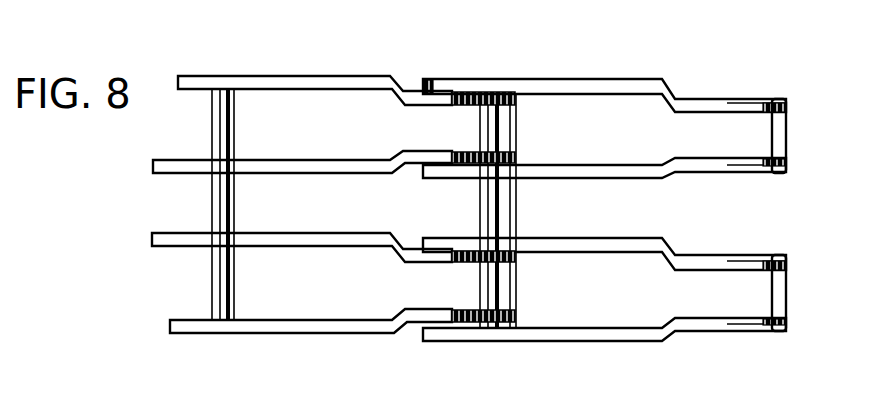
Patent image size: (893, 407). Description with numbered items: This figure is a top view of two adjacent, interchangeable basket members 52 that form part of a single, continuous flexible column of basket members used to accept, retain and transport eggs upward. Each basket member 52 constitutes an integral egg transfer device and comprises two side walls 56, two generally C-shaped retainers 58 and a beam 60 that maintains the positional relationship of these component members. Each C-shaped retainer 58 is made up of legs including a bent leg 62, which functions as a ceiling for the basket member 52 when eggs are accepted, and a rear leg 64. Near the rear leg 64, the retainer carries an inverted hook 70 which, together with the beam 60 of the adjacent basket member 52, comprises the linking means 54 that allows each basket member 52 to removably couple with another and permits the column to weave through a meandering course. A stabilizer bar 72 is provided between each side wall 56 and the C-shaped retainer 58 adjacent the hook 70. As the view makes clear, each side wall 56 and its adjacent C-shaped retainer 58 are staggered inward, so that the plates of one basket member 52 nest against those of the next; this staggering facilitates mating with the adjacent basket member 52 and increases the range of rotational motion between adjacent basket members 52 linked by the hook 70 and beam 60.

The basket member 52 is at (206, 344).
The linking means 54 is at (457, 80).
The side wall 56 is at (315, 77).
The C-shaped retainer 58 is at (257, 161).
The beam 60 is at (222, 195).
The bent leg 62 is at (186, 249).
The rear leg 64 is at (310, 246).
The inverted hook 70 is at (740, 176).
The stabilizer bar 72 is at (790, 143).